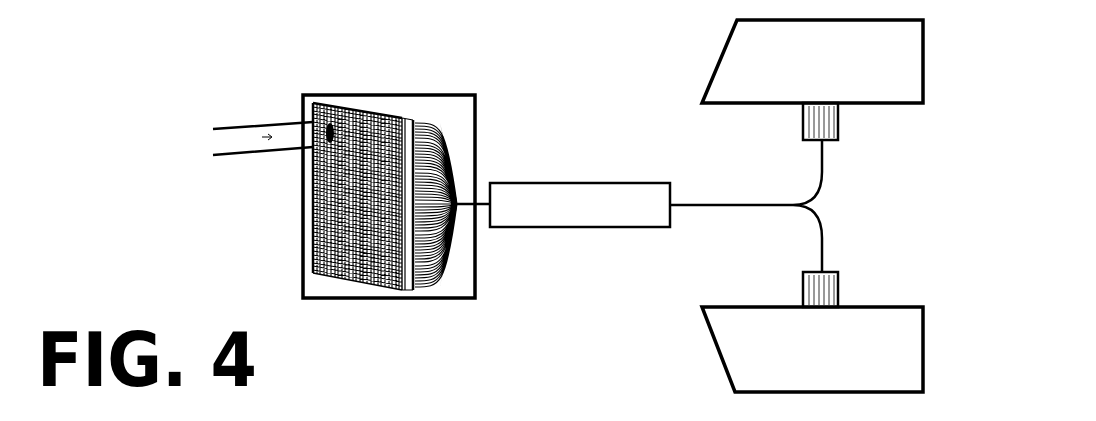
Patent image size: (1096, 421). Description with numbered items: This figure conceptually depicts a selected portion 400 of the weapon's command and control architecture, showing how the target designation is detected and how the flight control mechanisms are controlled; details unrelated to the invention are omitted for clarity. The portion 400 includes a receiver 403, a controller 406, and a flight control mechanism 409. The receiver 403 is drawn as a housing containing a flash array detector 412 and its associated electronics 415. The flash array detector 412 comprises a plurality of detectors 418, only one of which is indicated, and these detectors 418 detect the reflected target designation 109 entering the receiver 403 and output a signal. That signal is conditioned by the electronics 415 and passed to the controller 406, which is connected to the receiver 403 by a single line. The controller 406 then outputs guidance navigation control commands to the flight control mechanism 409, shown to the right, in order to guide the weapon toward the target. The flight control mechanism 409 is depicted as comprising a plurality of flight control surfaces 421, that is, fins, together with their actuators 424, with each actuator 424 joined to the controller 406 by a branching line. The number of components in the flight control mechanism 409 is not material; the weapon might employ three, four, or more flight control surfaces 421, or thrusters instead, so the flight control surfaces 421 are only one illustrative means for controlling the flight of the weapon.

The selected portion 400 is at (224, 61).
The reflected target designation 109 is at (218, 157).
The detector 418 is at (311, 91).
The flash array detector 412 is at (363, 108).
The electronics 415 is at (415, 120).
The receiver 403 is at (475, 93).
The controller 406 is at (579, 183).
The flight control mechanism 409 is at (656, 91).
The flight control surfaces 421 is at (713, 68).
The actuators 424 is at (800, 124).